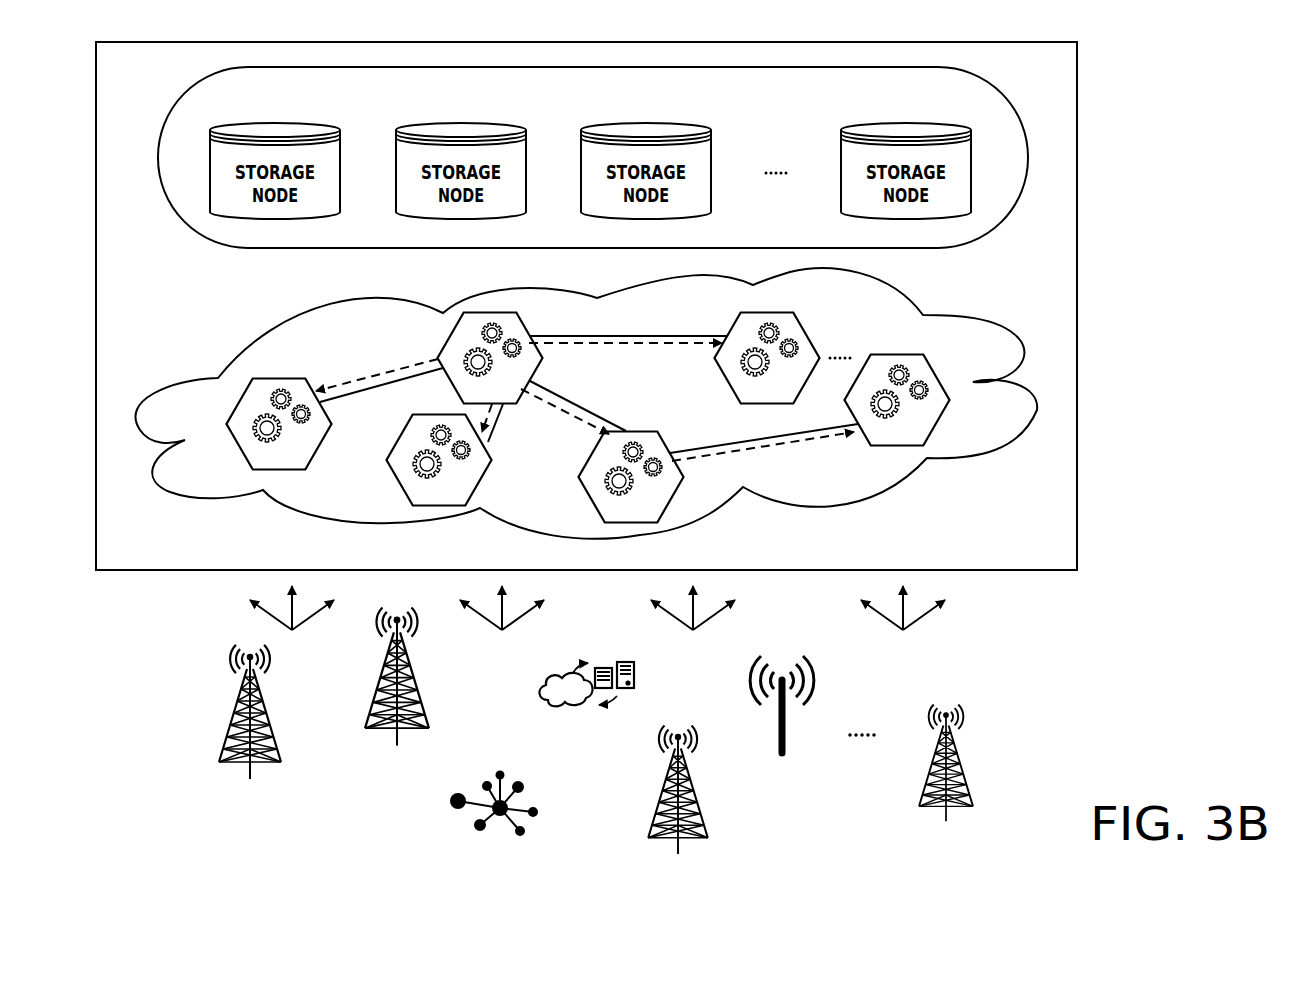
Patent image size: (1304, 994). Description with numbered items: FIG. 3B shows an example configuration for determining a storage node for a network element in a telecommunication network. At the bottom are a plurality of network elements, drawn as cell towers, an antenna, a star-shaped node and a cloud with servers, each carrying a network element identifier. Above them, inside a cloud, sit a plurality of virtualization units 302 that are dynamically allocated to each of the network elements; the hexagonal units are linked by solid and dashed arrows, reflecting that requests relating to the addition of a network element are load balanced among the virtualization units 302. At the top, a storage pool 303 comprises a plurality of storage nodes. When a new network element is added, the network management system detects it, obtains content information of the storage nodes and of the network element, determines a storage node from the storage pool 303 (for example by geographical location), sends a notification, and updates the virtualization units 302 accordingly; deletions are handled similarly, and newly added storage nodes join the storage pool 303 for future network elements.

The plurality of virtualization units 302 is at (990, 320).
The storage pool 303 is at (1003, 86).